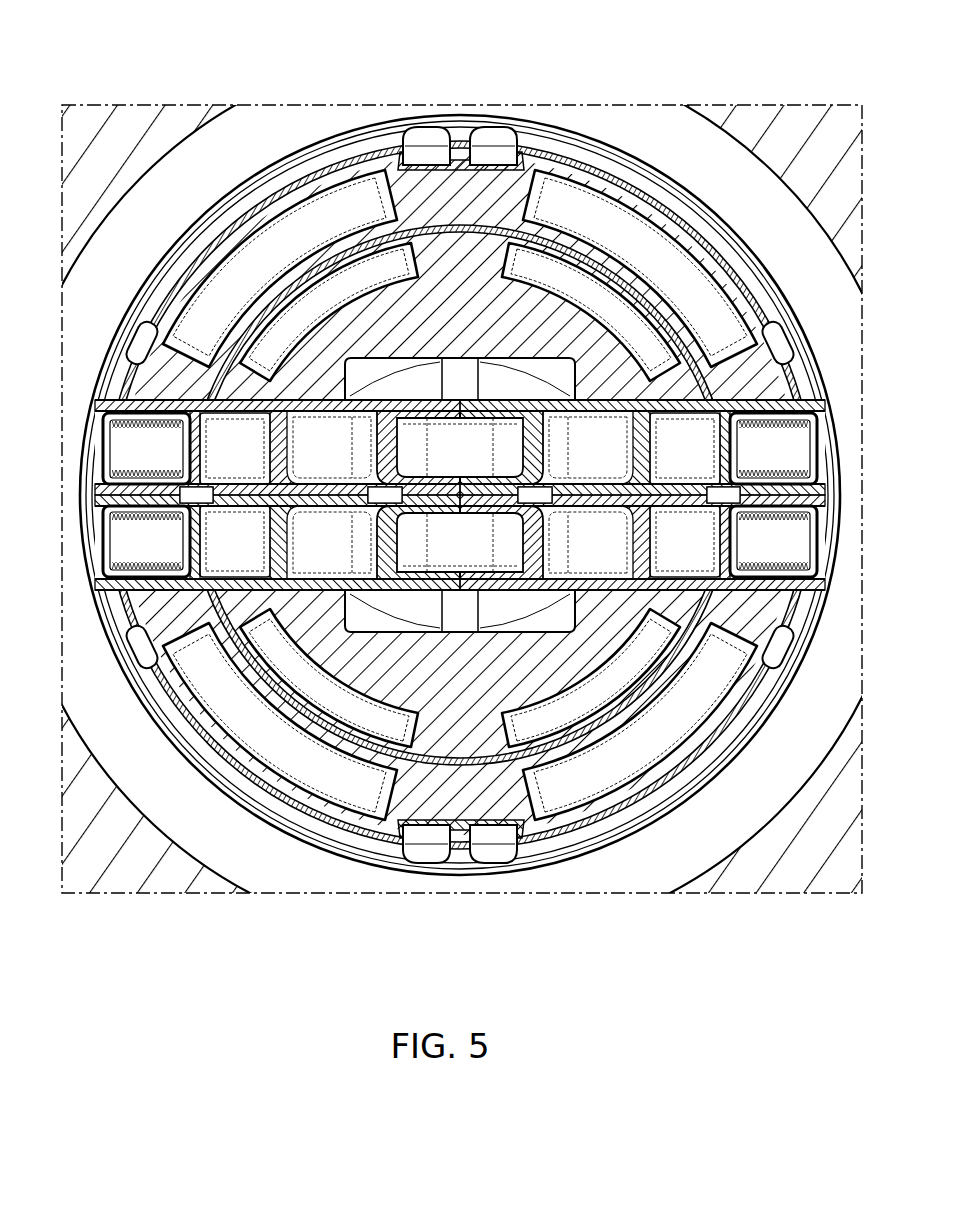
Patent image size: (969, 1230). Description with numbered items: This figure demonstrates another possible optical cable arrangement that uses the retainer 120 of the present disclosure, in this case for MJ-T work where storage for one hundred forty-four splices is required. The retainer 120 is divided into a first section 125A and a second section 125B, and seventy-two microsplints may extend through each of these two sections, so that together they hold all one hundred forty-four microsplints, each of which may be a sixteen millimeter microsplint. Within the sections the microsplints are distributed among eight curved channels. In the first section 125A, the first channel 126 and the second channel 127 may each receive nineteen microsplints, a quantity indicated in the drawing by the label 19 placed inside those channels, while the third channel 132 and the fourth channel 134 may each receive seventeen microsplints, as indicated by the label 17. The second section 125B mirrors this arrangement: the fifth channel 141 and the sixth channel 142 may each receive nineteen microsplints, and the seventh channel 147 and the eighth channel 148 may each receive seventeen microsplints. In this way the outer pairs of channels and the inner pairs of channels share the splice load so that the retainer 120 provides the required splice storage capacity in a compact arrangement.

The first cooling channels 17 is at (377, 268).
The second cooling channels 19 is at (352, 206).
The retainer 120 is at (453, 190).
The first section 125A is at (466, 285).
The second section 125B is at (448, 795).
The first channel 126 is at (292, 312).
The second channel 127 is at (616, 224).
The third channel 132 is at (297, 220).
The fourth channel 134 is at (646, 335).
The fifth channel 141 is at (326, 772).
The sixth channel 142 is at (611, 765).
The seventh channel 147 is at (320, 688).
The eighth channel 148 is at (630, 670).